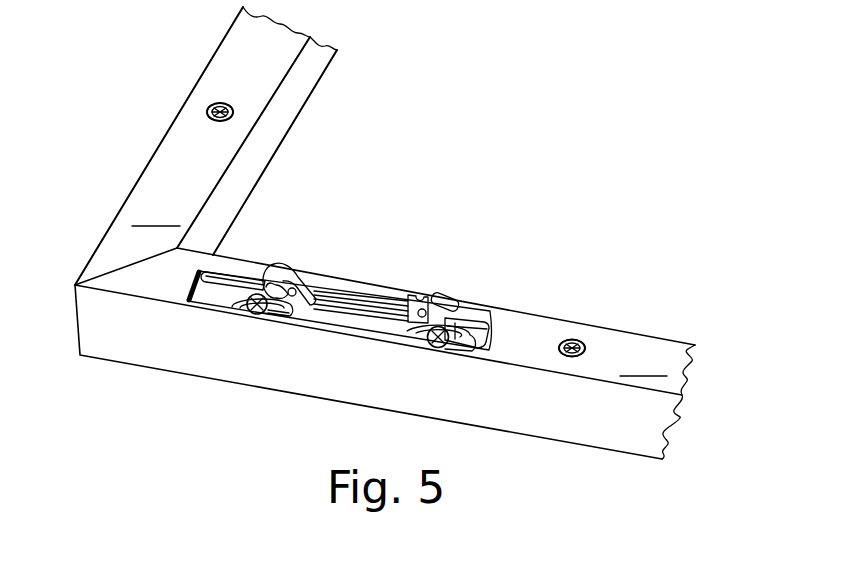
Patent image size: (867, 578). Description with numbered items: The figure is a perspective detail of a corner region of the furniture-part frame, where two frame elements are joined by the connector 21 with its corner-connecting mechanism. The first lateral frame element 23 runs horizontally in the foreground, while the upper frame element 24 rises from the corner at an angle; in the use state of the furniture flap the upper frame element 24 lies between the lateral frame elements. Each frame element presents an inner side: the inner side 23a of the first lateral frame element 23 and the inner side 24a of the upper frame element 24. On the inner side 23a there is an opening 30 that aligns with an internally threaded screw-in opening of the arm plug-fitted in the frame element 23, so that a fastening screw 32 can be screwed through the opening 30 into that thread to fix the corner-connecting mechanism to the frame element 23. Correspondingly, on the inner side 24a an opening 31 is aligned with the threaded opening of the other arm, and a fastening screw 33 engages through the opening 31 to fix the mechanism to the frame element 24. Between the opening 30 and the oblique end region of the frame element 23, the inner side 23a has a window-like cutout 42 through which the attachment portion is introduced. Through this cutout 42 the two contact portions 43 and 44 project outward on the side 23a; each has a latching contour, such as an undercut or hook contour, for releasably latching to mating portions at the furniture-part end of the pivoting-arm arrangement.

The connector 21 is at (414, 251).
The first lateral frame element 23 is at (414, 353).
The inner side of the frame element 23a is at (676, 332).
The upper frame element 24 is at (255, 146).
The inner side of the frame element 24a is at (156, 213).
The opening 30 is at (579, 364).
The opening 31 is at (208, 103).
The fastening screw 32 is at (574, 339).
The fastening screw 33 is at (206, 110).
The window-like cutout 42 is at (231, 273).
The contact portion 43 is at (456, 292).
The contact portion 44 is at (295, 264).